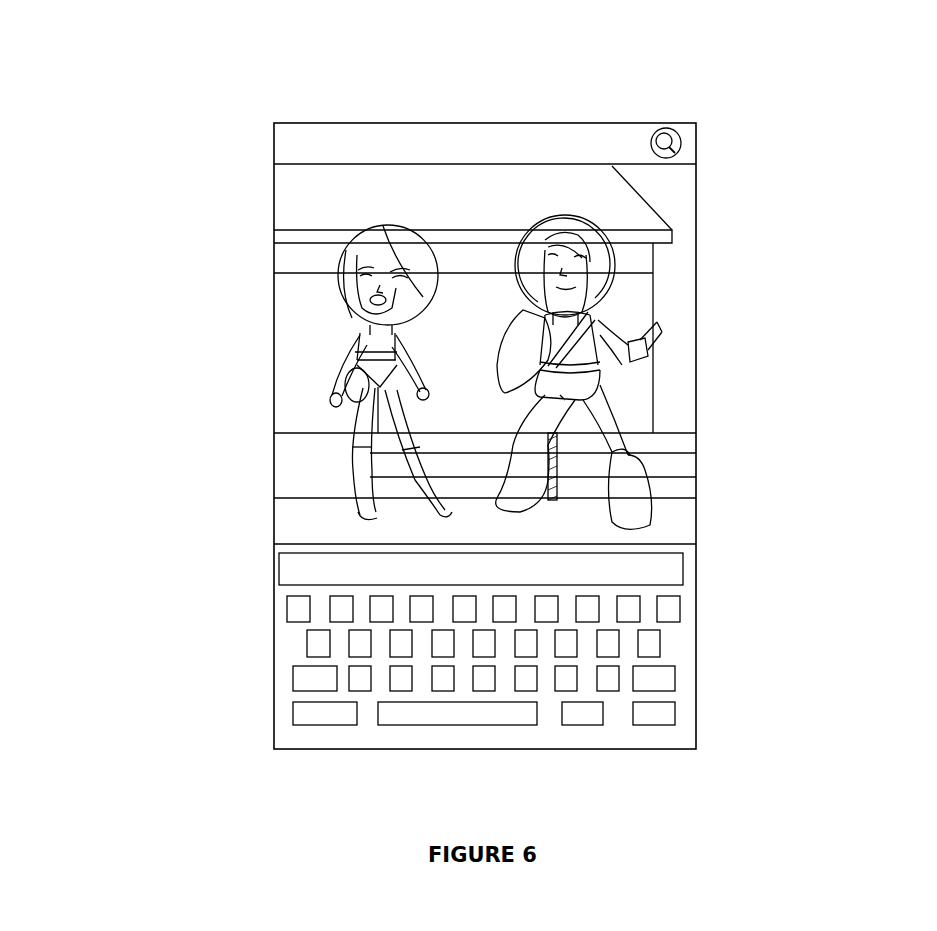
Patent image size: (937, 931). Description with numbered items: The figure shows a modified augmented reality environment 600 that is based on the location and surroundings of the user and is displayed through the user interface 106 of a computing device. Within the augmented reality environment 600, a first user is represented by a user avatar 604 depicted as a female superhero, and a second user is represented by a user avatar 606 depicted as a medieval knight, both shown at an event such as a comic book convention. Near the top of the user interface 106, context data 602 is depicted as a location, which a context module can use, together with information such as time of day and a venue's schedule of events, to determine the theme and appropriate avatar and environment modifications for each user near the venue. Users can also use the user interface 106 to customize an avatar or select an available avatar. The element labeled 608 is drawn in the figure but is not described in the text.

The augmented reality environment 600 is at (776, 106).
The user interface 106 is at (274, 123).
The context data 602 is at (557, 145).
The user avatar 604 is at (347, 342).
The user avatar 606 is at (603, 330).
The text input with keyboard 608 is at (683, 557).